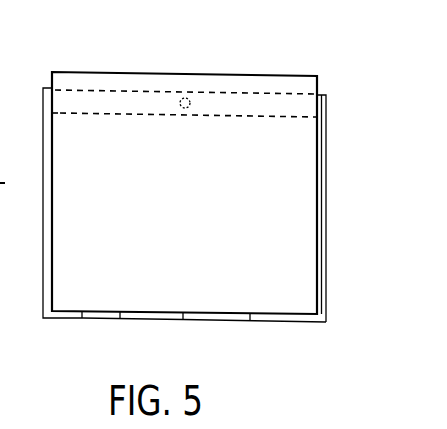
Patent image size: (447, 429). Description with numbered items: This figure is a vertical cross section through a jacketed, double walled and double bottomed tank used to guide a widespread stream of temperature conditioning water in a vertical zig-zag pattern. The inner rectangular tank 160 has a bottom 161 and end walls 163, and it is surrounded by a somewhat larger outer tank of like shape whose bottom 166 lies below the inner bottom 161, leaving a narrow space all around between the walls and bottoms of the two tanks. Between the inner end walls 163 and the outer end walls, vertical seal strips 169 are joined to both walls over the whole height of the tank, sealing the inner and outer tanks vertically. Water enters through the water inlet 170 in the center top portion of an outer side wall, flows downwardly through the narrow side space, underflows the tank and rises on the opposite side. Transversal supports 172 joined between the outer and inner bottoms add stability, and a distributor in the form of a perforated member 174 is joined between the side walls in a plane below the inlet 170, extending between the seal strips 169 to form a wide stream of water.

The rectangular tank 160 is at (281, 73).
The bottom 161 is at (85, 313).
The end walls 163 is at (322, 205).
The bottom 166 is at (280, 322).
The vertical seal strips 169 is at (322, 160).
The water inlet 170 is at (188, 97).
The transversal supports 172 is at (118, 313).
The perforated member 174 is at (285, 117).